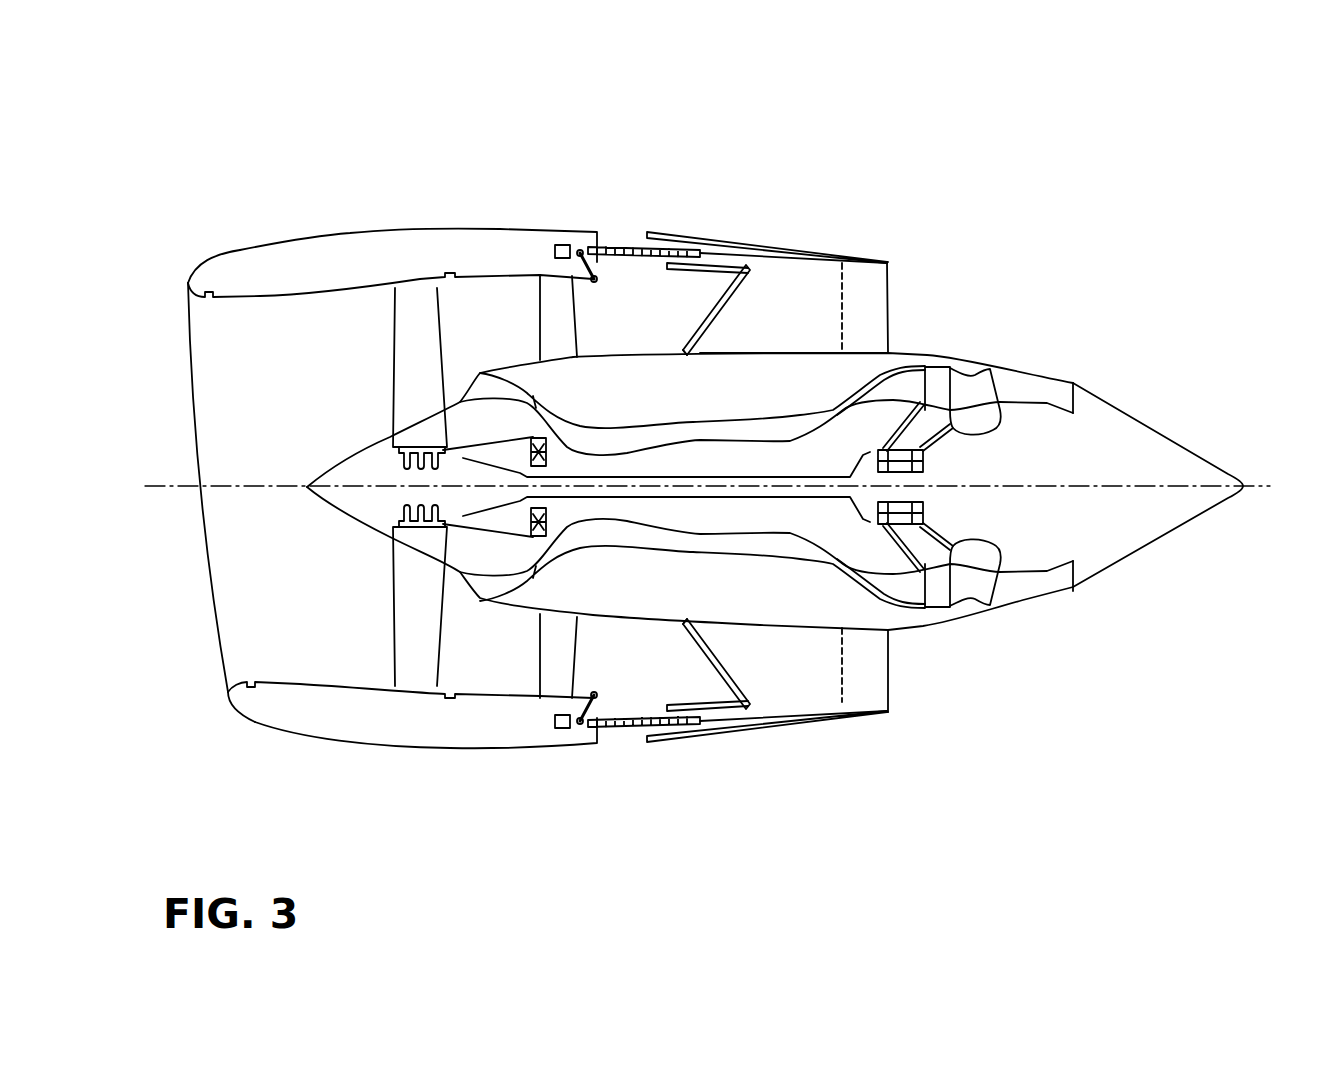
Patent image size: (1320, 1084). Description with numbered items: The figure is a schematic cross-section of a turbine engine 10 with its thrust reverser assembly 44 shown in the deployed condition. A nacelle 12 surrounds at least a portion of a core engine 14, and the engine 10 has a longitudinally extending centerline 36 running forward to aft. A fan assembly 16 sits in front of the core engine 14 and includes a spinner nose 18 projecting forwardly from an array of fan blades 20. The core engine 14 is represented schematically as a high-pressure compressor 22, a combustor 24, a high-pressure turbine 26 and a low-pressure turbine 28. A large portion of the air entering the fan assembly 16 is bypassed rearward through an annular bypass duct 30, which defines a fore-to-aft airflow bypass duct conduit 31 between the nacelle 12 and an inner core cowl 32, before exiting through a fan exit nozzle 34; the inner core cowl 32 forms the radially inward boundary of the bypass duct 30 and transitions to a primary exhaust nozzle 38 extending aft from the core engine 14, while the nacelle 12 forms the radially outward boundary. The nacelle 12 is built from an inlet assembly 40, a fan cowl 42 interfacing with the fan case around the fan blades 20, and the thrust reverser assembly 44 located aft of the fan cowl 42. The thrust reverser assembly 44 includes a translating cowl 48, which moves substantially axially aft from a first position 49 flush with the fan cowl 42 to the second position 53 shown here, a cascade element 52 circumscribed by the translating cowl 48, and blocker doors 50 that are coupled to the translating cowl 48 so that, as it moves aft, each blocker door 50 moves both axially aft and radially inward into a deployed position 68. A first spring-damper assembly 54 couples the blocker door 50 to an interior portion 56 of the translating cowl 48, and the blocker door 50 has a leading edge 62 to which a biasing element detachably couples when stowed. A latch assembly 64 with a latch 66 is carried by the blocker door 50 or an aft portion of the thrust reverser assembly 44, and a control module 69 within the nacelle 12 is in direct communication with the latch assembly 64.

The turbine engine 10 is at (918, 159).
The nacelle 12 is at (403, 182).
The core engine 14 is at (867, 610).
The fan assembly 16 is at (300, 620).
The spinner nose 18 is at (343, 510).
The fan blades 20 is at (407, 342).
The high-pressure compressor 22 is at (598, 442).
The combustor 24 is at (760, 437).
The high-pressure turbine 26 is at (817, 549).
The low-pressure turbine 28 is at (895, 384).
The bypass duct 30 is at (470, 335).
The fore-to-aft airflow bypass duct conduit 31 is at (866, 713).
The inner core cowl 32 is at (768, 350).
The fan exit nozzle 34 is at (889, 331).
The centerline 36 is at (180, 490).
The primary exhaust nozzle 38 is at (1020, 358).
The inlet assembly 40 is at (290, 236).
The fan cowl 42 is at (505, 227).
The thrust reverser assembly 44 is at (613, 208).
The translating cowl 48 is at (717, 243).
The first position 49 is at (842, 316).
The blocker door 50 is at (717, 320).
The cascade element 52 is at (672, 232).
The second position 53 is at (889, 255).
The first spring-damper assembly 54 is at (770, 285).
The interior portion 56 is at (686, 271).
The leading edge 62 is at (686, 357).
The latch assembly 64 is at (604, 298).
The latch 66 is at (596, 255).
The deployed position 68 is at (737, 300).
The control module 69 is at (560, 244).